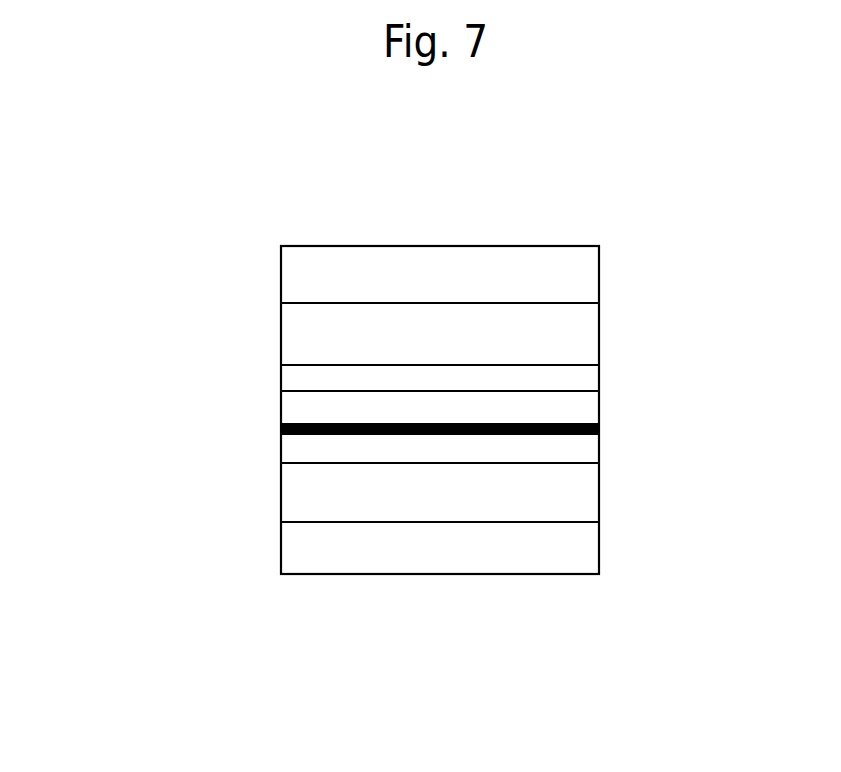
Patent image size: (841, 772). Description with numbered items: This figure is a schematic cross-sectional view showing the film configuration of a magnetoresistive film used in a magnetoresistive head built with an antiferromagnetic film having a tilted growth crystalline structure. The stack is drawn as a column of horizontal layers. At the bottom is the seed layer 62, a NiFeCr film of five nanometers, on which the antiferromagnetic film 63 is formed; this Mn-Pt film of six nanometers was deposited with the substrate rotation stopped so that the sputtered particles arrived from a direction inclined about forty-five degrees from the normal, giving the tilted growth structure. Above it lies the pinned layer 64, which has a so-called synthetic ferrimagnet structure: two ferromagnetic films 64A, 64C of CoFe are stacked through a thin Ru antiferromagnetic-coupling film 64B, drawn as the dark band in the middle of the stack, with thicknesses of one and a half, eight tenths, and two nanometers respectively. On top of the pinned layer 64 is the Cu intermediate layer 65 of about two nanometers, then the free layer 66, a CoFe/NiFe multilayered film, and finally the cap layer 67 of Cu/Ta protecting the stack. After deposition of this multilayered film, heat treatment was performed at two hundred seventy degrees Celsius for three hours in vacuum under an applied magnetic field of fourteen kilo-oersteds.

The cap layer 67 is at (497, 262).
The free layer 66 is at (585, 325).
The intermediate layer 65 is at (583, 375).
The pinned layer 64 is at (103, 347).
The ferromagnetic film 64C is at (307, 410).
The antiferromagnetic-coupling film 64B is at (282, 432).
The ferromagnetic film 64A is at (303, 457).
The antiferromagnetic film 63 is at (577, 485).
The seed layer 62 is at (577, 555).